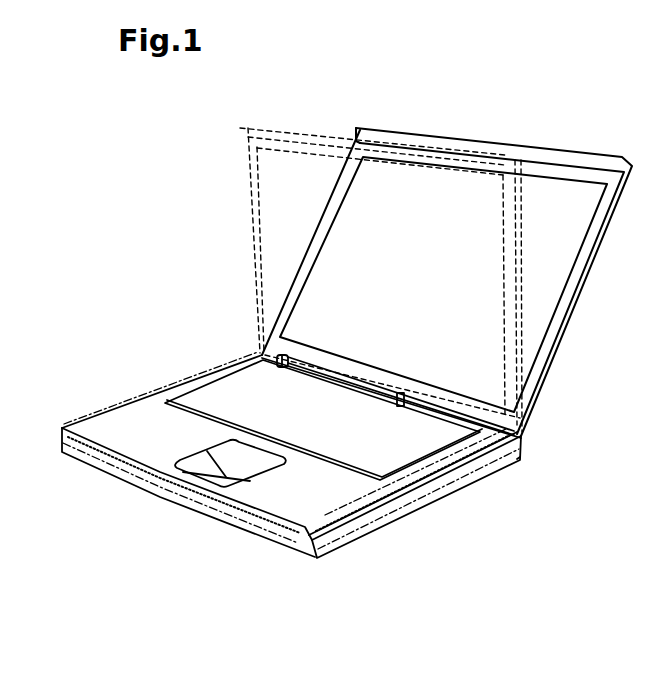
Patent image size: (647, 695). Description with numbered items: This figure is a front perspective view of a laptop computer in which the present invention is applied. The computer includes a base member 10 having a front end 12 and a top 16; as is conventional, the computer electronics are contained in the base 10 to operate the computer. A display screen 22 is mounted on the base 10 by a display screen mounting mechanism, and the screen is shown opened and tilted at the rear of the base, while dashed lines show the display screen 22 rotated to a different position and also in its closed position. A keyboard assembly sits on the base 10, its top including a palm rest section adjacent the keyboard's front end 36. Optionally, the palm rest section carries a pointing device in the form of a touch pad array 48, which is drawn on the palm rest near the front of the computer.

The base member 10 is at (380, 517).
The front end 12 is at (293, 550).
The top 16 is at (639, 473).
The display screen 22 is at (509, 213).
The front end 36 is at (256, 514).
The touch pad array 48 is at (227, 453).